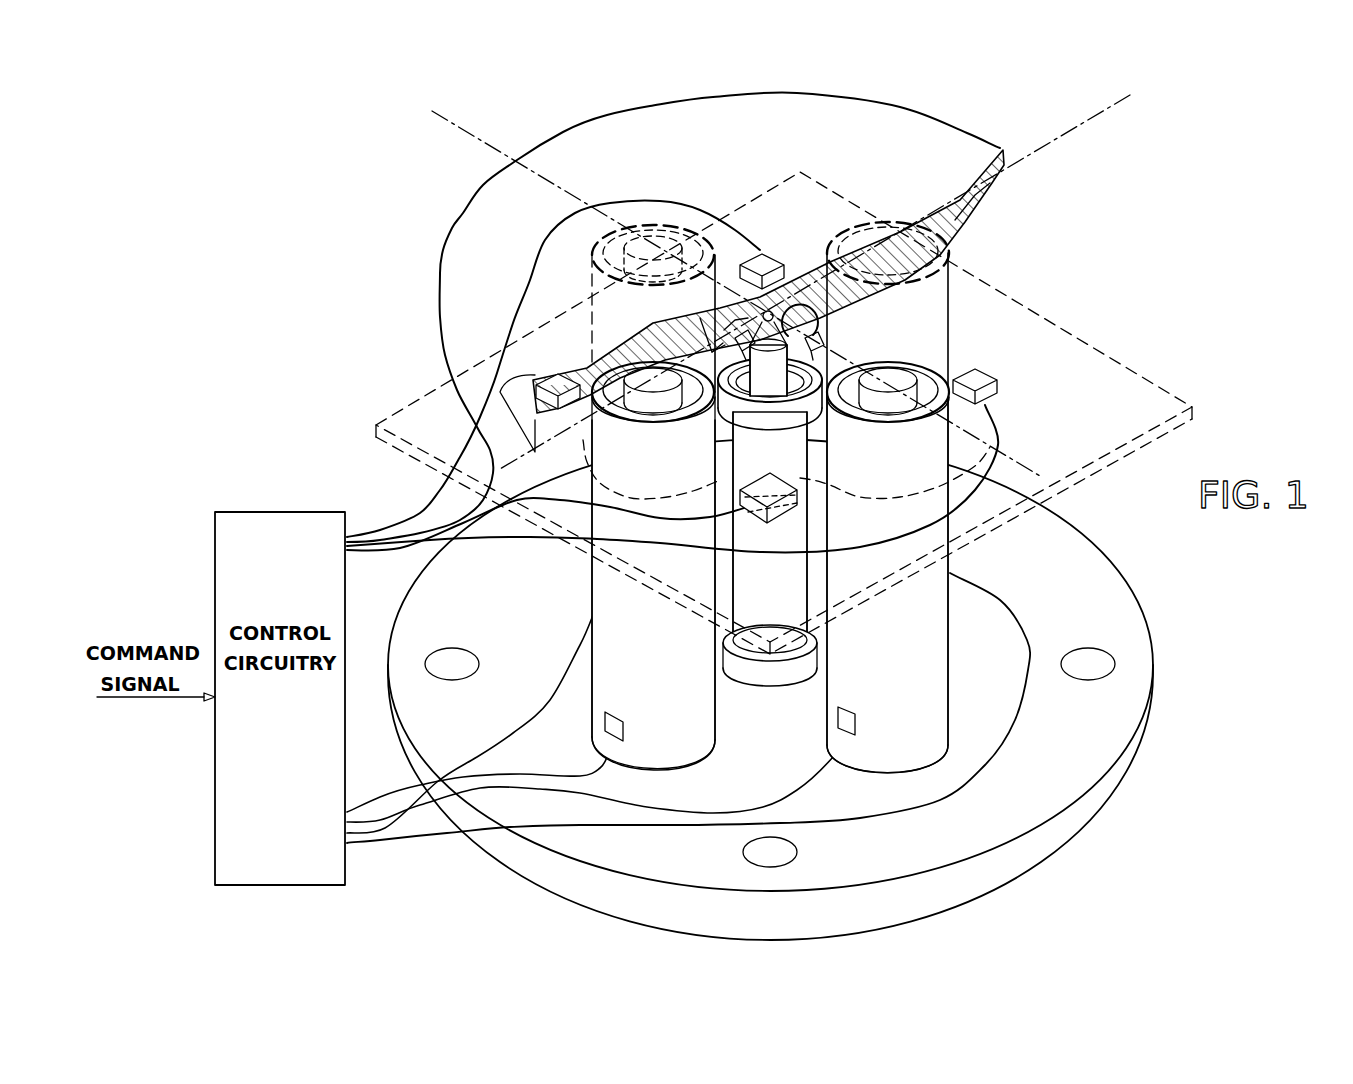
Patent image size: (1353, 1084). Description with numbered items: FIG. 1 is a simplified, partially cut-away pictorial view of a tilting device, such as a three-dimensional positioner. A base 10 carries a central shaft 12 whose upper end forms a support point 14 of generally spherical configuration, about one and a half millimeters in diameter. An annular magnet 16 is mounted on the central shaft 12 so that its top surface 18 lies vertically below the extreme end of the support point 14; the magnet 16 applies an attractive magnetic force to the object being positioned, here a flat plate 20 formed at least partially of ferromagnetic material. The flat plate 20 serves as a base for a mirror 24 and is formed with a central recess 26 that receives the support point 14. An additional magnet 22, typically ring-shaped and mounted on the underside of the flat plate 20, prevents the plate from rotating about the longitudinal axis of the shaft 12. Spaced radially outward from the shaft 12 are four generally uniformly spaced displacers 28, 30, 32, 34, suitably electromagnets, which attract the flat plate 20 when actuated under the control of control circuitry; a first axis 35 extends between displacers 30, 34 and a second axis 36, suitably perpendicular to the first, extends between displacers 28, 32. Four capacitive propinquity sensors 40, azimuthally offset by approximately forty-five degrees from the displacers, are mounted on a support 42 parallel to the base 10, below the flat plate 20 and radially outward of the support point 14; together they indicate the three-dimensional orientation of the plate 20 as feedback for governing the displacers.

The base 10 is at (1065, 788).
The central shaft 12 is at (778, 678).
The support point 14 is at (768, 353).
The annular magnet 16 is at (725, 414).
The top surface 18 is at (820, 414).
The flat plate 20 is at (978, 205).
The additional magnet 22 is at (815, 342).
The mirror 24 is at (972, 147).
The central recess 26 is at (740, 301).
The displacer 28 is at (938, 615).
The displacer 30 is at (605, 672).
The displacer 32 is at (610, 310).
The displacer 34 is at (945, 282).
The first axis 35 is at (476, 138).
The second axis 36 is at (1105, 112).
The propinquity sensors 40 is at (772, 255).
The support 42 is at (1087, 355).